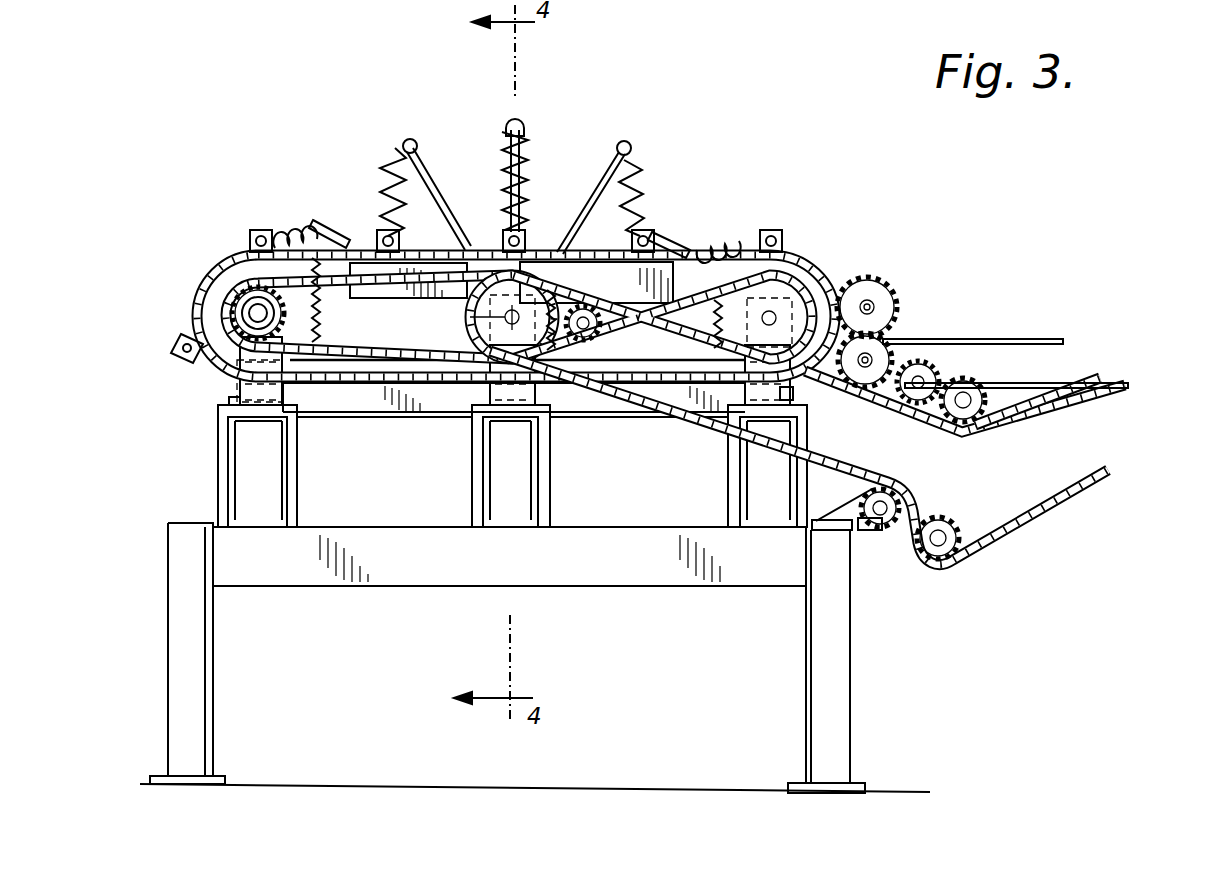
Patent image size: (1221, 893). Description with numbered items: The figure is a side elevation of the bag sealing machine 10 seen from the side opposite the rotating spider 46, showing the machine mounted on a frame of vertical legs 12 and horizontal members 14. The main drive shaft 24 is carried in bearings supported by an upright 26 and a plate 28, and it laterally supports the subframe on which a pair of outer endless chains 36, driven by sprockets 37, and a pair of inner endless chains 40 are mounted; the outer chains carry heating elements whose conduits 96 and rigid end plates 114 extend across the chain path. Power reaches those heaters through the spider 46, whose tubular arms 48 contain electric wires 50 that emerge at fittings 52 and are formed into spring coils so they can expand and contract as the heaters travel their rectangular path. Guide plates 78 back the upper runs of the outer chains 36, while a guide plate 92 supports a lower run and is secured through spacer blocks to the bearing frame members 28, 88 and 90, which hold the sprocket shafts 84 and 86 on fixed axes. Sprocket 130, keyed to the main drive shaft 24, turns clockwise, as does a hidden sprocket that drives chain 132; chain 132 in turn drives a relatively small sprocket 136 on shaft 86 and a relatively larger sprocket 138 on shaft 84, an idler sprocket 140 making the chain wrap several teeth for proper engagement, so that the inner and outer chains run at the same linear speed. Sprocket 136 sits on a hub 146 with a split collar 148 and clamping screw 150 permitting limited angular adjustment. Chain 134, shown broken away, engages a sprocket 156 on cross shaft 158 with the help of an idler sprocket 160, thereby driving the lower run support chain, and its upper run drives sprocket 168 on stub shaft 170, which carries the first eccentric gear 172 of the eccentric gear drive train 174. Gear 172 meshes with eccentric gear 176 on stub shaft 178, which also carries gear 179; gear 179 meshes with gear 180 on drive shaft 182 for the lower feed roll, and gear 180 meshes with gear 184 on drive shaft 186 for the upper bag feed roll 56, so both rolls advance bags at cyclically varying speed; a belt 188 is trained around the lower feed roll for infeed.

The machine 10 is at (733, 82).
The vertical legs 12 is at (202, 670).
The horizontal members 14 is at (414, 586).
The main drive shaft 24 is at (490, 320).
The upright 26 is at (480, 463).
The plate 28 is at (502, 395).
The endless chains 36 is at (222, 266).
The sprockets 37 is at (216, 288).
The endless chains 40 is at (340, 230).
The spider 46 is at (578, 138).
The tubular arms 48 is at (446, 190).
The electric wires 50 is at (381, 175).
The fittings 52 is at (510, 116).
The upper bag feed roll 56 is at (898, 306).
The guide plates 78 is at (415, 252).
The sprocket shaft 84 is at (772, 319).
The sprocket shaft 86 is at (225, 372).
The rigid frame bearing member 88 is at (806, 412).
The rigid frame bearing member 90 is at (237, 400).
The guide plate 92 is at (577, 418).
The conduit 96 is at (250, 241).
The end plates 114 is at (258, 230).
The sprocket 130 is at (535, 262).
The chain 132 is at (352, 418).
The chain 134 is at (652, 432).
The sprocket 136 is at (325, 315).
The sprocket 138 is at (800, 250).
The idler sprocket 140 is at (583, 314).
The hub 146 is at (262, 300).
The split collar 148 is at (250, 313).
The clamping screw 150 is at (242, 303).
The sprocket 156 is at (882, 540).
The cross shaft 158 is at (900, 498).
The idler sprocket 160 is at (962, 532).
The sprocket 168 is at (992, 420).
The stub shaft 170 is at (966, 424).
The first gear 172 is at (990, 378).
The eccentric gear drive train 174 is at (958, 372).
The gear 176 is at (912, 420).
The stub shaft 178 is at (922, 372).
The gear 179 is at (920, 344).
The gear 180 is at (916, 330).
The drive shaft 182 is at (866, 388).
The gear 184 is at (868, 298).
The drive shaft 186 is at (880, 280).
The belt 188 is at (1060, 342).